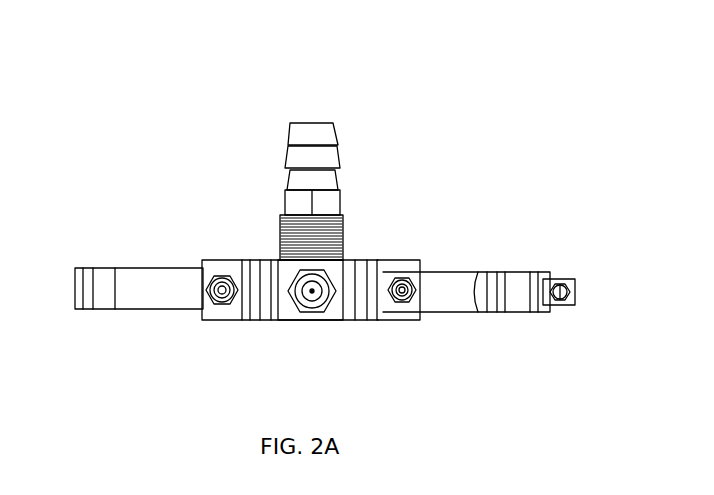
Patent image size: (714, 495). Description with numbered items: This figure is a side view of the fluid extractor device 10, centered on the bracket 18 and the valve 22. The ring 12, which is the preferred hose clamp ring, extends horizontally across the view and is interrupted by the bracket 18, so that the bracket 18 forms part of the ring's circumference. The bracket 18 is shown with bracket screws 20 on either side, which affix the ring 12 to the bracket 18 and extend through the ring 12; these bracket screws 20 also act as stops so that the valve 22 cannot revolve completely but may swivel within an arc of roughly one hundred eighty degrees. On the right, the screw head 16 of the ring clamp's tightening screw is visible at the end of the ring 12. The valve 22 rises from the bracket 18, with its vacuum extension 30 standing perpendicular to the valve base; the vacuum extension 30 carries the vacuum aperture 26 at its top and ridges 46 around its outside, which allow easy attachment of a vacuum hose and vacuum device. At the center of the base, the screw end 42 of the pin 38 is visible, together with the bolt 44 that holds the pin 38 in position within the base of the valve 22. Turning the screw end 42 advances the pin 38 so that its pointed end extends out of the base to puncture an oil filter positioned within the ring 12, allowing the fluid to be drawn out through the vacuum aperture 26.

The fluid extractor device 10 is at (74, 60).
The ring 12 is at (85, 291).
The screw head 16 is at (572, 280).
The bracket 18 is at (212, 262).
The bracket screws 20 is at (216, 300).
The valve 22 is at (217, 148).
The vacuum aperture 26 is at (296, 106).
The vacuum extension 30 is at (335, 132).
The pin 38 is at (330, 312).
The screw end 42 is at (311, 296).
The bolt 44 is at (297, 302).
The ridges 46 is at (338, 168).